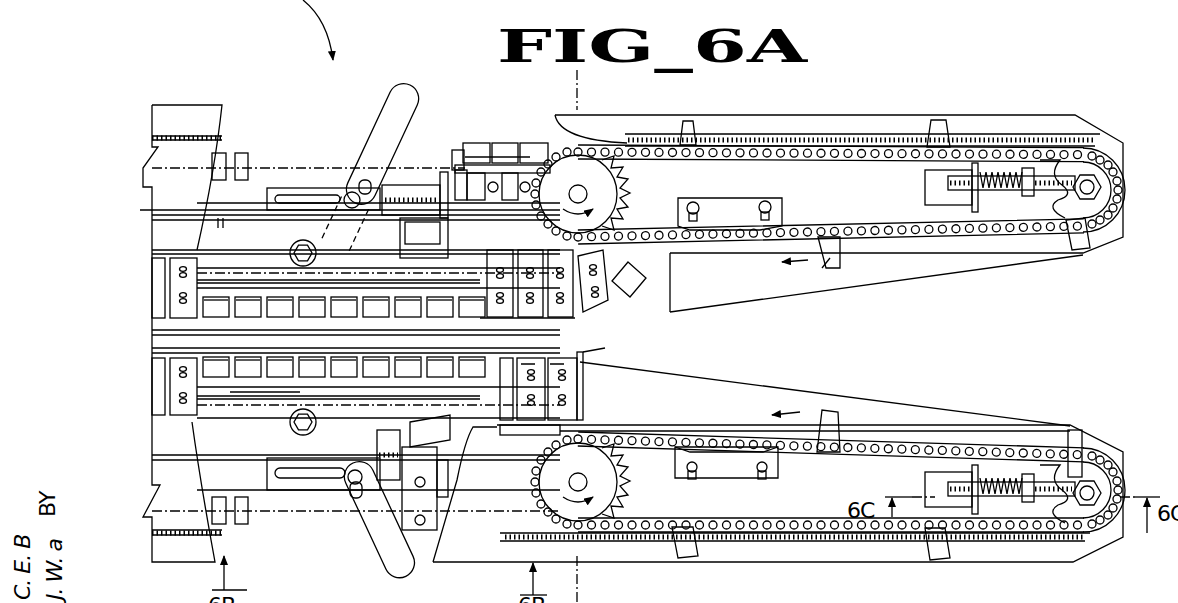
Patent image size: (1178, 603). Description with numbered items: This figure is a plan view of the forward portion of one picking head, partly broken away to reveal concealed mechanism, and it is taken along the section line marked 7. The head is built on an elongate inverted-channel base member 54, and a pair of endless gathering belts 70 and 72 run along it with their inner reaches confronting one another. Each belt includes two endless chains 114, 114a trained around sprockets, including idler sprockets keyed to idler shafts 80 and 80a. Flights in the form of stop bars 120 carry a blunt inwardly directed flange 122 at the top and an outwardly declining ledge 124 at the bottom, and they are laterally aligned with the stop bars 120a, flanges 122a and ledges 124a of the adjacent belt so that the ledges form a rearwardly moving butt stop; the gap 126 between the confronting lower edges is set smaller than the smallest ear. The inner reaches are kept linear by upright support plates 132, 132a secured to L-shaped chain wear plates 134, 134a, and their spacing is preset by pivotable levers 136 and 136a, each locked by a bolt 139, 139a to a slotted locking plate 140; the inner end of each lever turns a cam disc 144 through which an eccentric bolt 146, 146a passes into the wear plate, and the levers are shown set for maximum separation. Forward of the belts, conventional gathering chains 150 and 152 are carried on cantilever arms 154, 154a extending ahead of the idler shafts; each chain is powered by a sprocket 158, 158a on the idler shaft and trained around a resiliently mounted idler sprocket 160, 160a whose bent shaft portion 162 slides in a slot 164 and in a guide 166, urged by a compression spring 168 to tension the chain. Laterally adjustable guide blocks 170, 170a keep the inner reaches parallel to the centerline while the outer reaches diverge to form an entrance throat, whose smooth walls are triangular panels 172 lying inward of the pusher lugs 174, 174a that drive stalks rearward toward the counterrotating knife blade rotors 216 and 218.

The section line 7- 7 is at (577, 72).
The base member 54 is at (196, 208).
The gathering belt 70 is at (150, 378).
The gathering belt 72 is at (150, 287).
The idler shaft 80 is at (567, 483).
The idler shaft 80a is at (586, 191).
The endless chain 114 is at (515, 520).
The endless chain 114a is at (460, 160).
The stop bar flight 120 is at (570, 378).
The stop bar flight 120a is at (578, 296).
The inwardly directed flange 122 is at (530, 425).
The inwardly directed flange 122a is at (538, 158).
The outwardly declining ledge 124 is at (528, 358).
The outwardly declining ledge 124a is at (210, 316).
The gap 126 is at (500, 318).
The gathering belt support plate 132 is at (216, 410).
The gathering belt support plate 132a is at (213, 275).
The chain wear plate 134 is at (200, 393).
The chain wear plate 134a is at (197, 290).
The pivotable lever 136 is at (368, 522).
The pivotable lever 136a is at (417, 88).
The bolt 139 is at (350, 486).
The bolt 139a is at (360, 182).
The slotted locking plate 140 is at (267, 200).
The cam disc 144 is at (240, 398).
The bolt 146 is at (296, 430).
The bolt 146a is at (298, 244).
The gathering chain 150 is at (950, 447).
The gathering chain 152 is at (1014, 233).
The cantilever arm 154 is at (833, 565).
The cantilever arm 154a is at (876, 116).
The sprocket 158 is at (622, 490).
The sprocket 158a is at (620, 190).
The idler sprocket 160 is at (1085, 472).
The idler sprocket 160a is at (1090, 170).
The threaded shaft portion 162 is at (1075, 503).
The slot 164 is at (1040, 478).
The guide 166 is at (925, 480).
The compression spring 168 is at (1010, 518).
The guide block 170 is at (744, 470).
The guide block 170a is at (740, 206).
The triangular panel 172 is at (922, 280).
The pusher lug 174 is at (832, 420).
The pusher lug 174a is at (832, 262).
The knife blade rotor 216 is at (178, 350).
The knife blade rotor 218 is at (180, 335).